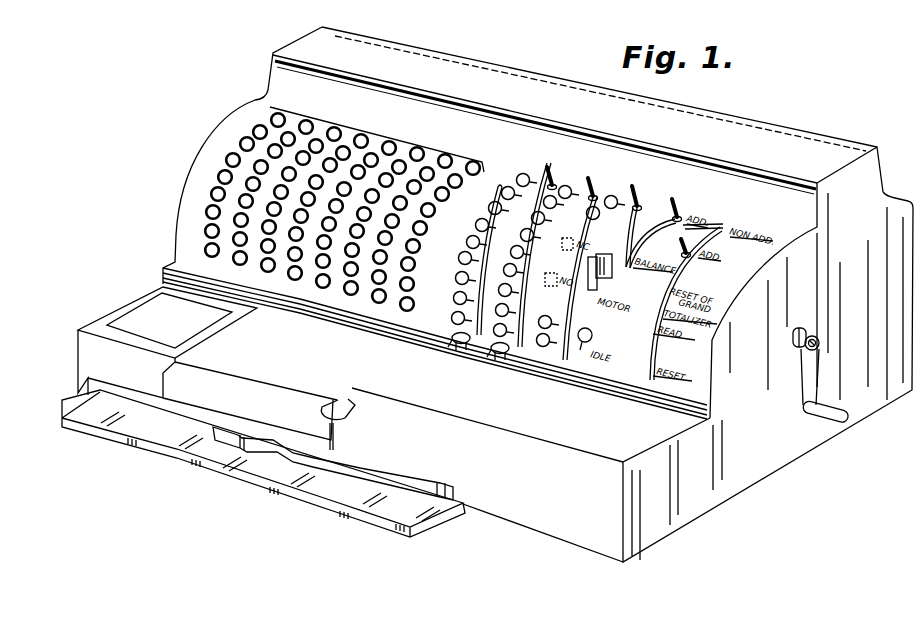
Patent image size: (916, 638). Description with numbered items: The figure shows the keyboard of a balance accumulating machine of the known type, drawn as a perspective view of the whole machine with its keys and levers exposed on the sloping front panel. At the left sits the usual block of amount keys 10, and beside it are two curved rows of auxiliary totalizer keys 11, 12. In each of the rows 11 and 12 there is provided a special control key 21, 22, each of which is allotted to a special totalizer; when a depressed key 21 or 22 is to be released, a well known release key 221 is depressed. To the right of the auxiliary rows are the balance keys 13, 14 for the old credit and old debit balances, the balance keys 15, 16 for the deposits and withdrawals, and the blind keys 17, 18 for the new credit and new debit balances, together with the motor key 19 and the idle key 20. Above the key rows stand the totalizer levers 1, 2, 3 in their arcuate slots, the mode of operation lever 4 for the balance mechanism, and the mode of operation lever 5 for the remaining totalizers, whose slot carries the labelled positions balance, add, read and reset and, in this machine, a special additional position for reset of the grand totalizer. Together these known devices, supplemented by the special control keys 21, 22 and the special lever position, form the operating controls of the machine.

The amount keys 10 is at (387, 133).
The row of auxiliary totalizer keys 11 is at (458, 252).
The row of auxiliary totalizer keys 12 is at (494, 264).
The special control key 21 is at (522, 173).
The totalizer lever 1 is at (549, 165).
The special control key 22 is at (566, 185).
The totalizer lever 2 is at (592, 178).
The balance key 15 is at (611, 195).
The balance key 16 is at (600, 215).
The totalizer lever 3 is at (636, 186).
The mode of operation lever 4 is at (676, 199).
The mode of operation lever 5 is at (680, 244).
The blind key 17 is at (569, 238).
The blind key 18 is at (551, 273).
The motor key 19 is at (608, 257).
The balance key 13 is at (545, 315).
The balance key 14 is at (541, 347).
The idle key 20 is at (592, 336).
The release key 221 is at (490, 352).